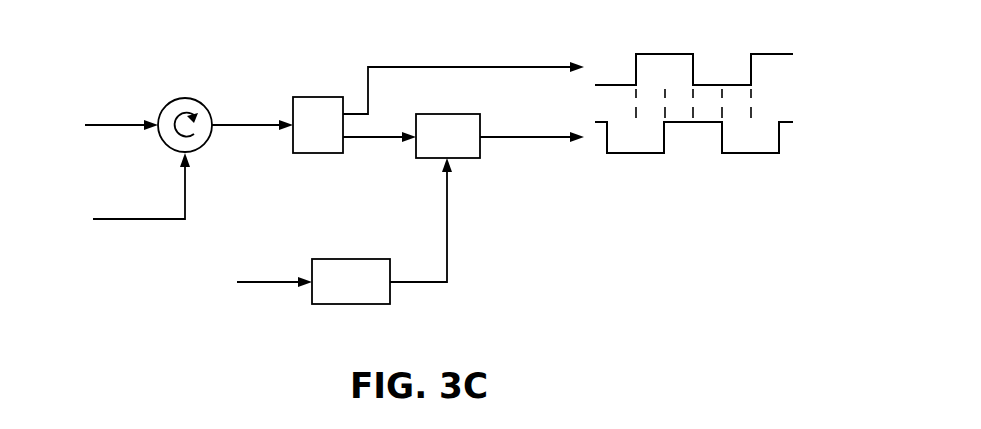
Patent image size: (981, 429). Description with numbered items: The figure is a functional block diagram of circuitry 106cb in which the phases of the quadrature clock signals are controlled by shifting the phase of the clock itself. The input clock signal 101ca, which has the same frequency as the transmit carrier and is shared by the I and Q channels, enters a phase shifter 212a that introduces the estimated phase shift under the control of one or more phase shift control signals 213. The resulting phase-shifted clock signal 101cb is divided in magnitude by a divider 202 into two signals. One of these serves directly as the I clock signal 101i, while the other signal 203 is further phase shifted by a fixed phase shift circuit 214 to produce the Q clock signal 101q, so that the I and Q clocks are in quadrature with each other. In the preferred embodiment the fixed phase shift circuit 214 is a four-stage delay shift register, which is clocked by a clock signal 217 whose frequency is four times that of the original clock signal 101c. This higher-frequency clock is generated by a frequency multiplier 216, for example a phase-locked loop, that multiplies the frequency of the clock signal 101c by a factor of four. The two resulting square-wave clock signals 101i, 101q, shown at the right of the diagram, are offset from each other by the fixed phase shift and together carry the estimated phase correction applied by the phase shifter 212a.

The input clock signal 101ca is at (112, 123).
The phase shifter 212a is at (185, 97).
The phase-shifted clock signal 101cb is at (252, 123).
The divider 202 is at (313, 97).
The I clock signal 101i is at (485, 67).
The divided clock signal 203 is at (370, 138).
The fixed phase shift circuit 214 is at (470, 159).
The Q clock signal 101q is at (513, 137).
The phase shift control signals 213 is at (130, 219).
The clock phase control circuitry 106cb is at (150, 265).
The clock signal 101c is at (264, 282).
The frequency multiplier 216 is at (354, 305).
The clock signal 217 is at (420, 284).